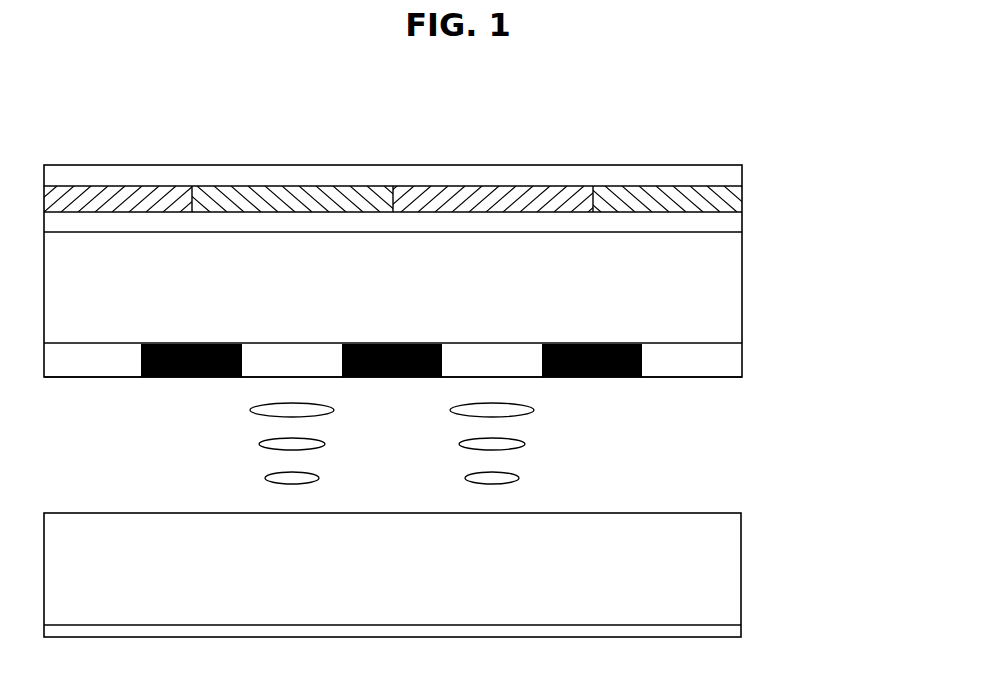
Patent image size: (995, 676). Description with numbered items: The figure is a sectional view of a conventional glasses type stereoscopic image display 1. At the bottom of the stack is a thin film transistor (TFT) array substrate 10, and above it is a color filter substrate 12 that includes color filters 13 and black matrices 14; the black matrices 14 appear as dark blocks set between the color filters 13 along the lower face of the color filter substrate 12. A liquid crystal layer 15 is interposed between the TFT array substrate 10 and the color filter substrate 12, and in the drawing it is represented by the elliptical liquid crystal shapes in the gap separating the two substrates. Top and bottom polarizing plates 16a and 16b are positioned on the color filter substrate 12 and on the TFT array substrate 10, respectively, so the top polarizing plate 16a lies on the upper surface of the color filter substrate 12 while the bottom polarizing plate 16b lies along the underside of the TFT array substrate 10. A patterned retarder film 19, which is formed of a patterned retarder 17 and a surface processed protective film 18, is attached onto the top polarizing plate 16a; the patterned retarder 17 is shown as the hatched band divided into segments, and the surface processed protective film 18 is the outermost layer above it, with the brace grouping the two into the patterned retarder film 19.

The glasses type stereoscopic image display 1 is at (84, 135).
The thin film transistor (TFT) array substrate 10 is at (735, 560).
The color filter substrate 12 is at (737, 293).
The color filters 13 is at (737, 362).
The black matrices 14 is at (620, 378).
The liquid crystal layer 15 is at (513, 443).
The top polarizing plate 16a is at (737, 224).
The bottom polarizing plate 16b is at (735, 629).
The patterned retarder 17 is at (737, 200).
The surface processed protective film 18 is at (737, 178).
The patterned retarder film 19 is at (835, 172).